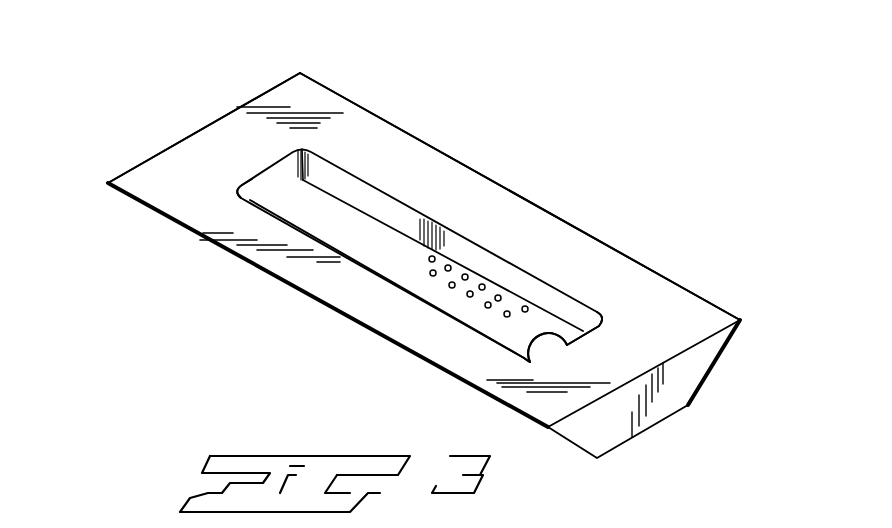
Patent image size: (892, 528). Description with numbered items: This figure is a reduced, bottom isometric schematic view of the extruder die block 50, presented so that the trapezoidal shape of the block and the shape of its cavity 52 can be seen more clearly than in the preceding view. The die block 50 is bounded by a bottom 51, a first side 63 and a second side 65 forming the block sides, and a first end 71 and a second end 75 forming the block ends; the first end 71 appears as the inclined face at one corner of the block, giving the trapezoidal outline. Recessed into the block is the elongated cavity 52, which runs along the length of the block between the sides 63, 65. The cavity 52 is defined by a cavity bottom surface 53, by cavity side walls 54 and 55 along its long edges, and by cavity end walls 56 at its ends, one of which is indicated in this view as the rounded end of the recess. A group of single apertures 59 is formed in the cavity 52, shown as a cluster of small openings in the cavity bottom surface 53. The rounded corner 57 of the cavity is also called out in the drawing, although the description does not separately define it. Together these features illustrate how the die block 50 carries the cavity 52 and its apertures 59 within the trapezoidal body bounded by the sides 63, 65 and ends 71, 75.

The extruder die block 50 is at (427, 250).
The bottom 51 is at (693, 310).
The cavity 52 is at (338, 231).
The cavity bottom surface 53 is at (294, 222).
The cavity side wall 54 is at (487, 257).
The cavity side wall 55 is at (411, 295).
The cavity end wall 56 is at (523, 354).
The rounded corner 57 is at (250, 181).
The single apertures 59 is at (490, 302).
The first side 63 is at (440, 151).
The second side 65 is at (305, 295).
The first end 71 is at (670, 397).
The second end 75 is at (252, 99).